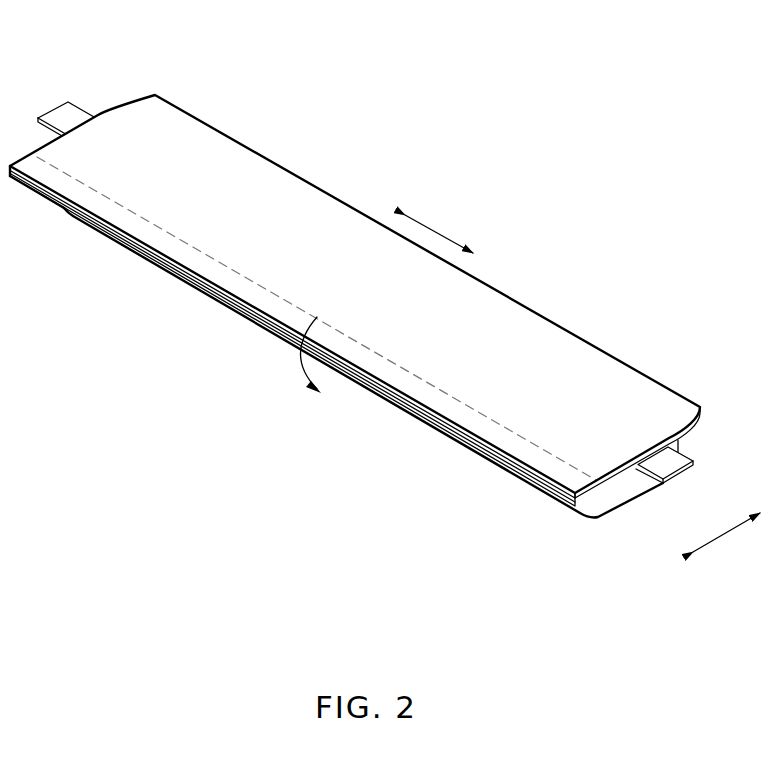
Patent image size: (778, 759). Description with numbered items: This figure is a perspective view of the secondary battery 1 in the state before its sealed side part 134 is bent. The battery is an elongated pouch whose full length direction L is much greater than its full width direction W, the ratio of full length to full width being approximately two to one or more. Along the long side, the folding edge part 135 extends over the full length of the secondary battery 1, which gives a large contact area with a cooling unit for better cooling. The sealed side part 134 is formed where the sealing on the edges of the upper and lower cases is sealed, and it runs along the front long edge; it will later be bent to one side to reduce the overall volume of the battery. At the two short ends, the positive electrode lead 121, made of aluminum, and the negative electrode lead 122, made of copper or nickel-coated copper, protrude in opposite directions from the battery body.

The secondary battery 1 is at (427, 84).
The positive electrode lead 121 is at (673, 467).
The negative electrode lead 122 is at (61, 113).
The sealed side part 134 is at (237, 285).
The folding edge part 135 is at (557, 316).